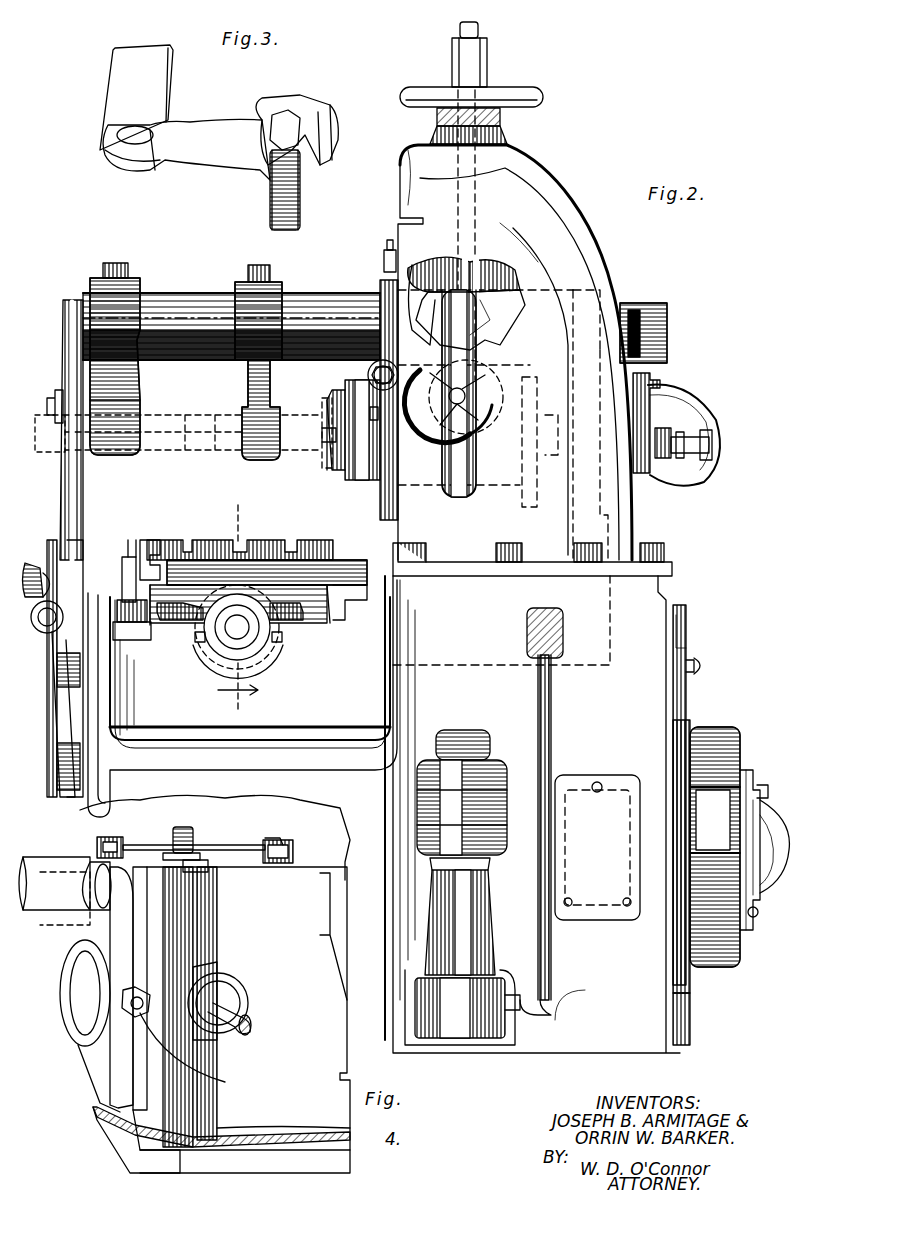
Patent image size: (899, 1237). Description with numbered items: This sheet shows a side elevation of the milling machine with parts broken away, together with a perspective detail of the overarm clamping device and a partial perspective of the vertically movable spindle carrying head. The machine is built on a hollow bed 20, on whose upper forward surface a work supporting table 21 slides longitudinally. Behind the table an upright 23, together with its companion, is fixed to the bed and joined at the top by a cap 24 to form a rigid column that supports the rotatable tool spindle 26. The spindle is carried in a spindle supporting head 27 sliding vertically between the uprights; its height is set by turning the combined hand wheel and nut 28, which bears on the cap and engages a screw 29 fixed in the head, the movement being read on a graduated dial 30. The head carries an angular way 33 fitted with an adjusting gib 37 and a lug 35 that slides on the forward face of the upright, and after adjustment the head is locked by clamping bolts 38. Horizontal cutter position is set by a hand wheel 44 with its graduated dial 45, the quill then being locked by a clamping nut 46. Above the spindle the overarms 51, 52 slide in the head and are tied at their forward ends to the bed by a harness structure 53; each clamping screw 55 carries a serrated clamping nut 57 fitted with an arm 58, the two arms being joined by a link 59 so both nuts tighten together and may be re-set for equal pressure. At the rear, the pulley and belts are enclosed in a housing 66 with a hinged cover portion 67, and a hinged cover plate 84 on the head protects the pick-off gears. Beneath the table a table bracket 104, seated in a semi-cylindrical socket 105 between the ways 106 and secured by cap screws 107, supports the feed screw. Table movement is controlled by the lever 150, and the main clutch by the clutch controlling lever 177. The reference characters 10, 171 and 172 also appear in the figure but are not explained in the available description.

In FIG. 2, the saddle / knee 10 is at (242, 651).
In FIG. 2, the bed 20 is at (648, 608).
In FIG. 2, the work supporting table 21 is at (170, 540).
In FIG. 2, the upright 23 is at (590, 282).
In FIG. 2, the cap 24 is at (548, 175).
In FIG. 2, the tool spindle 26 is at (335, 488).
In FIG. 2, the spindle supporting head 27 is at (510, 335).
In FIG. 4, the spindle supporting head 27 is at (112, 1068).
In FIG. 2, the combined hand wheel and nut 28 is at (530, 90).
In FIG. 4, the screw 29 is at (185, 827).
In FIG. 2, the graduated dial 30 is at (505, 138).
In FIG. 2, the angular way 33 is at (458, 330).
In FIG. 4, the angular way 33 is at (200, 862).
In FIG. 2, the lug 35 is at (385, 505).
In FIG. 2, the adjusting gib 37 is at (428, 262).
In FIG. 4, the adjusting gib 37 is at (185, 930).
In FIG. 2, the clamping bolts 38 is at (368, 410).
In FIG. 2, the hand wheel 44 is at (478, 435).
In FIG. 2, the graduated dial 45 is at (435, 420).
In FIG. 2, the clamping nut 46 is at (395, 365).
In FIG. 4, the clamping nut 46 is at (186, 1028).
In FIG. 4, the overarm 51 is at (45, 857).
In FIG. 2, the overarm 52 is at (193, 293).
In FIG. 4, the overarm 52 is at (45, 920).
In FIG. 2, the harness structure 53 is at (62, 285).
In FIG. 3, the clamping screw 55 is at (285, 212).
In FIG. 3, the clamping nut 57 is at (312, 118).
In FIG. 2, the clamping nut 57 is at (380, 260).
In FIG. 4, the clamping nut 57 is at (118, 835).
In FIG. 3, the arm 58 is at (190, 165).
In FIG. 4, the arm 58 is at (130, 860).
In FIG. 3, the link 59 is at (143, 75).
In FIG. 2, the link 59 is at (495, 272).
In FIG. 4, the link 59 is at (252, 853).
In FIG. 2, the housing 66 is at (700, 716).
In FIG. 2, the hinged cover portion 67 is at (745, 758).
In FIG. 2, the hinged cover plate 84 is at (665, 410).
In FIG. 2, the table bracket 104 is at (262, 655).
In FIG. 2, the semi-cylindrical socket 105 is at (203, 650).
In FIG. 2, the ways 106 is at (285, 645).
In FIG. 2, the cap screws 107 is at (197, 648).
In FIG. 2, the lever 150 is at (35, 558).
In FIG. 2, the stop 171 is at (150, 540).
In FIG. 2, the stop bracket 172 is at (122, 560).
In FIG. 2, the clutch controlling lever 177 is at (45, 720).